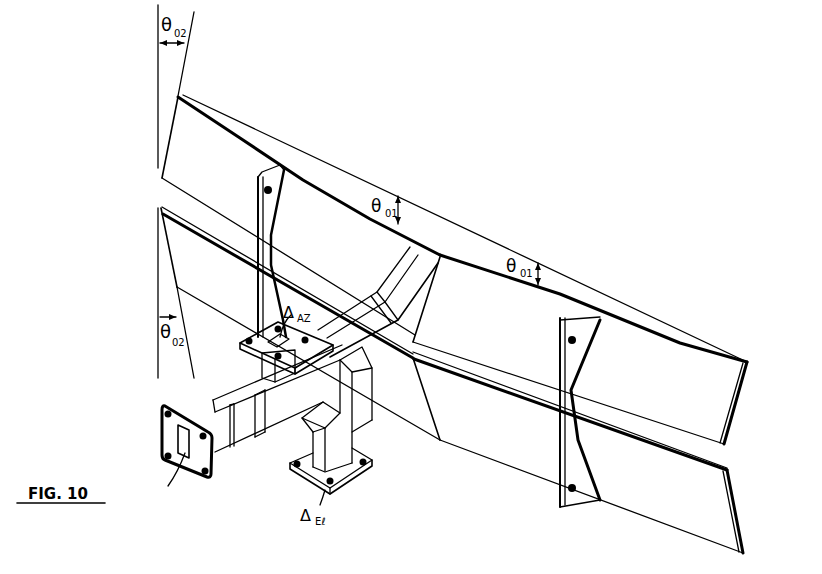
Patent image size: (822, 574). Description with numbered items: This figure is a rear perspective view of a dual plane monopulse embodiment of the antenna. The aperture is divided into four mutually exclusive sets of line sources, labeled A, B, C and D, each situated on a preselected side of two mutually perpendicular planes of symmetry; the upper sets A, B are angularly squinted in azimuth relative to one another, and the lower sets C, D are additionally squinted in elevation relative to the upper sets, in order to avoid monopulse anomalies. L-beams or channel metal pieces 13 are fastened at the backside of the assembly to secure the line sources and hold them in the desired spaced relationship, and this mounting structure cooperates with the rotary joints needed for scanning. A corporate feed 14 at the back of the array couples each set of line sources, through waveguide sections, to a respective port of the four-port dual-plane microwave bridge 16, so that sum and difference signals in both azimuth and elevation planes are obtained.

The L-beams or channel metal pieces 13 is at (562, 322).
The corporate feed 14 is at (395, 347).
The dual-plane microwave bridge 16 is at (242, 442).
The set of line sources / input port A is at (504, 330).
The set of line sources / input port B is at (325, 256).
The set of line sources / input port C is at (506, 439).
The set of line sources / input port D is at (211, 259).